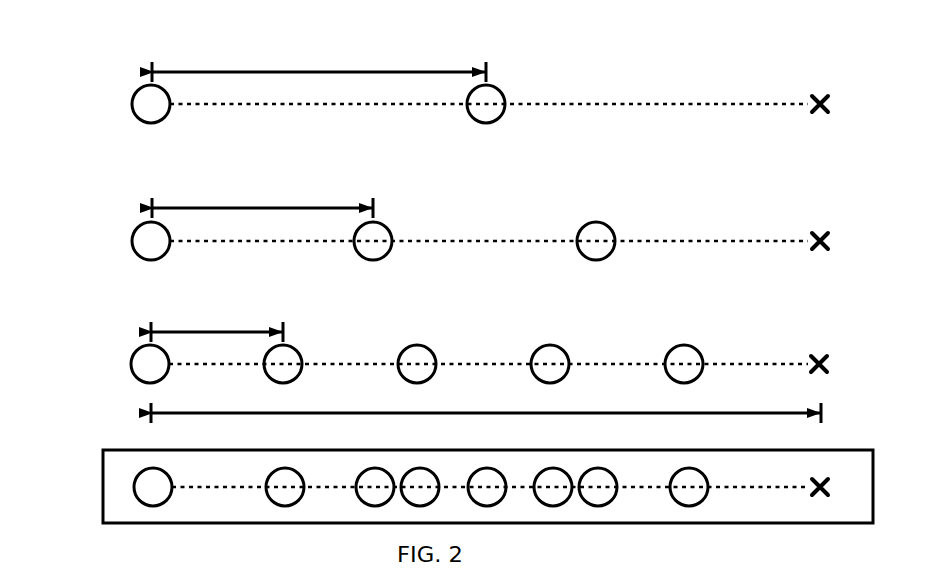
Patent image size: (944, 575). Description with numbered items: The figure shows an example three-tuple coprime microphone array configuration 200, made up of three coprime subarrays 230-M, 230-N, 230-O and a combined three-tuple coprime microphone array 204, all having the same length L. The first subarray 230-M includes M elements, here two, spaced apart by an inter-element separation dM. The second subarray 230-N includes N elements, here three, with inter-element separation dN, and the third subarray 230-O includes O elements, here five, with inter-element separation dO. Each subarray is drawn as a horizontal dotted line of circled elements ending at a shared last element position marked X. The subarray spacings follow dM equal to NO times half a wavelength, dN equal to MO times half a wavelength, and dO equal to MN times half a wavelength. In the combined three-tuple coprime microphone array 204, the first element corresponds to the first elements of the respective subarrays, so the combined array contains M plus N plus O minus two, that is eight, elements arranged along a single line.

The 3-tuple coprime microphone array configuration 200 is at (56, 17).
The first subarray 230-M is at (80, 110).
The second subarray 230-N is at (76, 245).
The third subarray 230-O is at (80, 369).
The combined 3-tuple coprime microphone array 204 is at (80, 490).